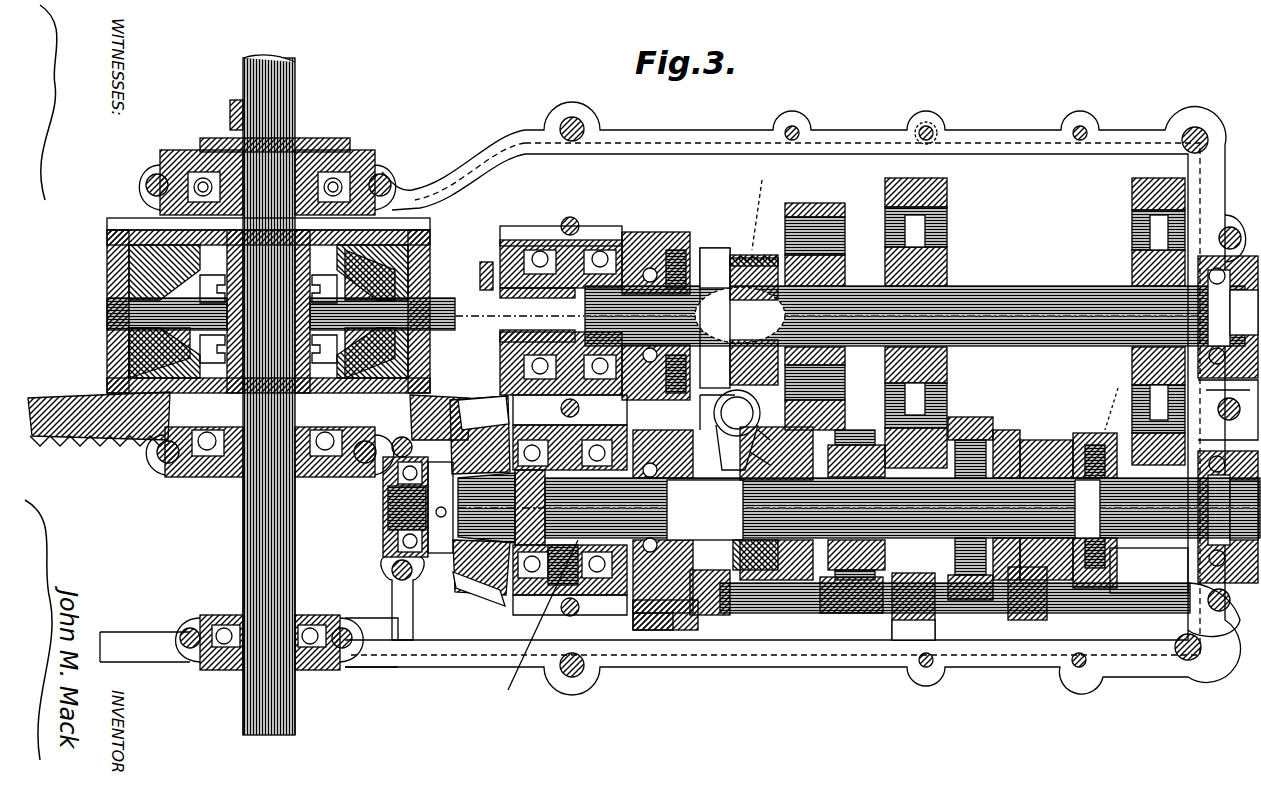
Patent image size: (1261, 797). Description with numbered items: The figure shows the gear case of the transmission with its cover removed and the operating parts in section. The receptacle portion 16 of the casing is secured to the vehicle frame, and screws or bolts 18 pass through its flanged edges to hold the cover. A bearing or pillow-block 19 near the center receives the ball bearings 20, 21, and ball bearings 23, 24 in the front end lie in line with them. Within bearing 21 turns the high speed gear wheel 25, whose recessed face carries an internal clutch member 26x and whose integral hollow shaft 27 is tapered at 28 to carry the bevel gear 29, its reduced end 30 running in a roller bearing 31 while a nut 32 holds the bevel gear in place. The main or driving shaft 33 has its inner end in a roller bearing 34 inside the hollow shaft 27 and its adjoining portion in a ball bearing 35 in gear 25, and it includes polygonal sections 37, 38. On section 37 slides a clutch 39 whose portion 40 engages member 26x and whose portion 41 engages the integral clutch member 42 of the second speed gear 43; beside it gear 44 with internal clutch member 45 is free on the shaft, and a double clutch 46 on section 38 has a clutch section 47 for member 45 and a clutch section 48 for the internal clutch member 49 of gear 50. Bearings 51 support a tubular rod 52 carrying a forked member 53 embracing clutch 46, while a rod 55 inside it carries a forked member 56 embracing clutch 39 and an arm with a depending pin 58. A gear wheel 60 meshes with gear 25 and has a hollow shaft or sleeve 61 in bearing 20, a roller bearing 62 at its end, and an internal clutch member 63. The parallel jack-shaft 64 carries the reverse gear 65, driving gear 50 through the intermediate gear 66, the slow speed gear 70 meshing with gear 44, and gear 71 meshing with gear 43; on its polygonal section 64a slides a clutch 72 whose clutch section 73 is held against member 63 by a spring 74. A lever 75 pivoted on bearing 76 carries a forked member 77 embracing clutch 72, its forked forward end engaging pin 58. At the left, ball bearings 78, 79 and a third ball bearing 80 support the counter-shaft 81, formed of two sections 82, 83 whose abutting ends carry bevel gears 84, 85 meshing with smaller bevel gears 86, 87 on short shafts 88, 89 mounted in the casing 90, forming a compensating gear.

The receptacle portion 16 is at (670, 398).
The screws or bolts 18 is at (930, 126).
The bearing or pillow-block 19 is at (570, 505).
The ball bearing 20 is at (520, 262).
The ball bearing 21 is at (540, 594).
The ball bearing 23 is at (1232, 230).
The ball bearing 24 is at (1190, 600).
The gear wheel 25 is at (662, 640).
The internal clutch member 26x is at (645, 635).
The hollow shaft 27 is at (530, 507).
The tapered portion 28 is at (486, 508).
The bevel gear 29 is at (472, 588).
The reduced end 30 is at (388, 512).
The roller bearing 31 is at (385, 555).
The nut 32 is at (440, 507).
The main or driving shaft 33 is at (859, 508).
The roller bearing 34 is at (534, 625).
The ball bearing 35 is at (648, 531).
The polygonal section 37 is at (776, 503).
The polygonal section 38 is at (1087, 509).
The clutch 39 is at (755, 555).
The clutch portion 40 is at (716, 405).
The clutch portion 41 is at (770, 436).
The integral clutch member 42 is at (762, 460).
The second speed gear 43 is at (852, 448).
The gear 44 is at (913, 606).
The internal clutch member 45 is at (990, 430).
The double clutch 46 is at (1035, 440).
The clutch section 47 is at (1008, 432).
The clutch section 48 is at (1082, 433).
The internal clutch member 49 is at (1111, 401).
The gear 50 is at (1145, 555).
The bearings 51 is at (913, 629).
The tubular rod 52 is at (1082, 612).
The forked member 53 is at (1012, 600).
The rod 55 is at (780, 600).
The forked member 56 is at (706, 600).
The depending pin 58 is at (705, 510).
The gear wheel 60 is at (658, 245).
The hollow shaft or sleeve 61 is at (592, 250).
The roller bearing 62 is at (500, 265).
The internal clutch member 63 is at (702, 240).
The jack-shaft 64 is at (850, 316).
The polygonal section 64a is at (785, 308).
The reverse gear 65 is at (1132, 207).
The intermediate gear 66 is at (1225, 410).
The slow speed gear 70 is at (885, 184).
The gear 71 is at (815, 303).
The clutch 72 is at (754, 245).
The clutch section 73 is at (748, 260).
The spring 74 is at (760, 250).
The lever 75 is at (754, 365).
The bearing 76 is at (737, 430).
The forked member 77 is at (761, 205).
The ball bearing 78 is at (345, 165).
The ball bearing 79 is at (300, 620).
The ball bearing 80 is at (212, 476).
The counter-shaft 81 is at (269, 386).
The counter-shaft section 82 is at (243, 100).
The counter-shaft section 83 is at (240, 552).
The bevel gear 84 is at (385, 368).
The bevel gear 85 is at (125, 262).
The bevel gear 86 is at (415, 268).
The bevel gear 87 is at (125, 355).
The short shaft 88 is at (108, 312).
The short shaft 89 is at (382, 314).
The casing 90 is at (430, 226).